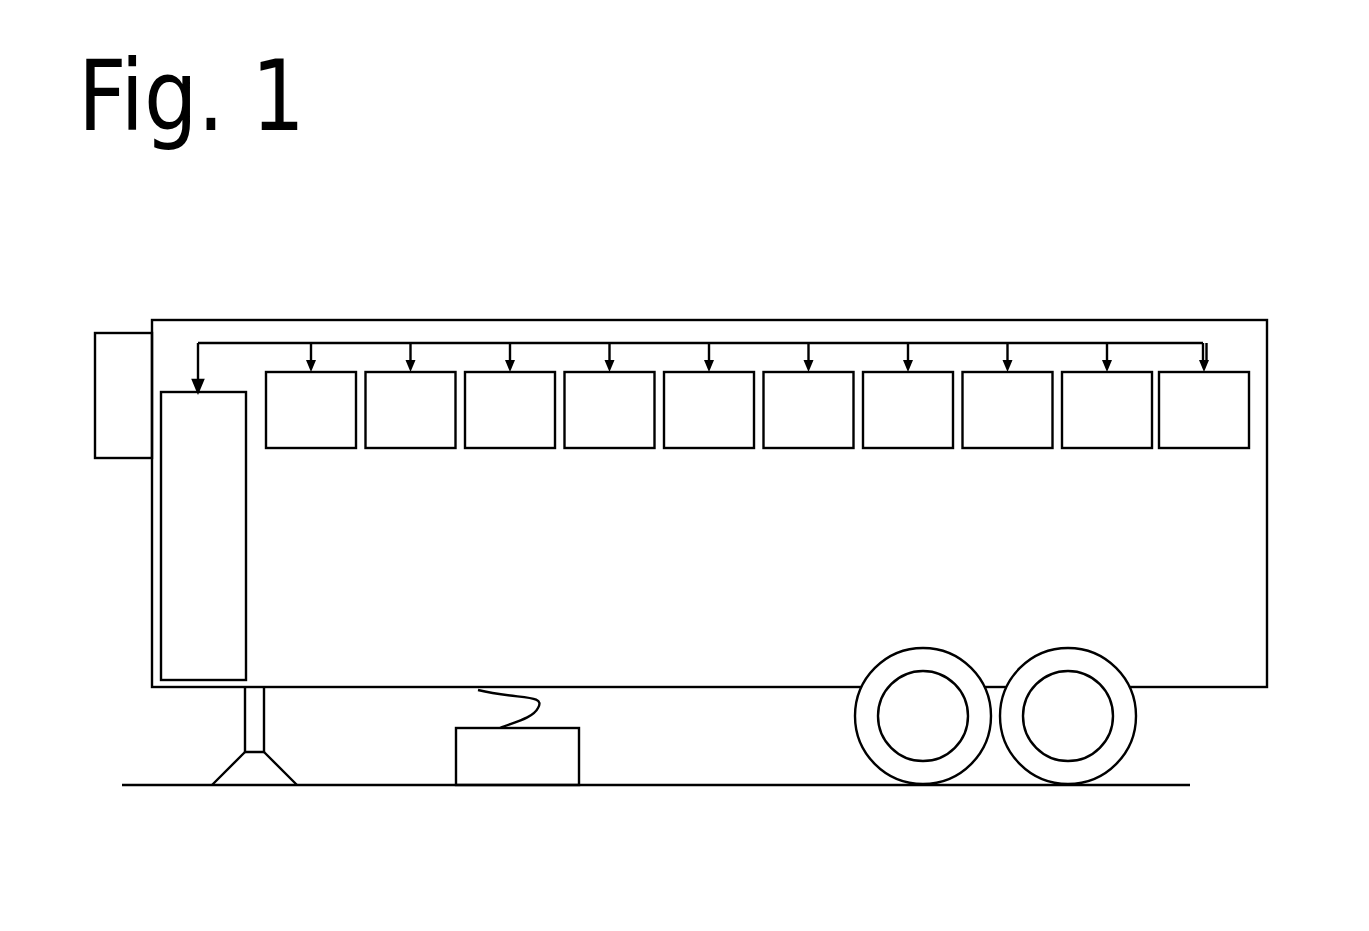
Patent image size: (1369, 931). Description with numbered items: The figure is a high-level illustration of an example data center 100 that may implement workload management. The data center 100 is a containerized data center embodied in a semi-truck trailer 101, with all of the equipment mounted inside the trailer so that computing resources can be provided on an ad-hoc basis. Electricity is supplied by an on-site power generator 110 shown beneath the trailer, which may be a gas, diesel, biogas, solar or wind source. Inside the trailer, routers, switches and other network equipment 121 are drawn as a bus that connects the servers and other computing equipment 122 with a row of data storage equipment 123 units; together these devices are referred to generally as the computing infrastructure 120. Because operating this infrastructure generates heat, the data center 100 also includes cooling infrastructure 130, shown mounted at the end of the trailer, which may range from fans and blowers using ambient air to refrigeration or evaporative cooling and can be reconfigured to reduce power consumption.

The data center 100 is at (1182, 270).
The semi-truck trailer 101 is at (1268, 605).
The power generator 110 is at (581, 760).
The computing infrastructure 120 is at (656, 560).
The network equipment 121 is at (265, 343).
The computing equipment 122 is at (248, 622).
The data storage equipment 123 is at (288, 449).
The cooling infrastructure 130 is at (116, 322).